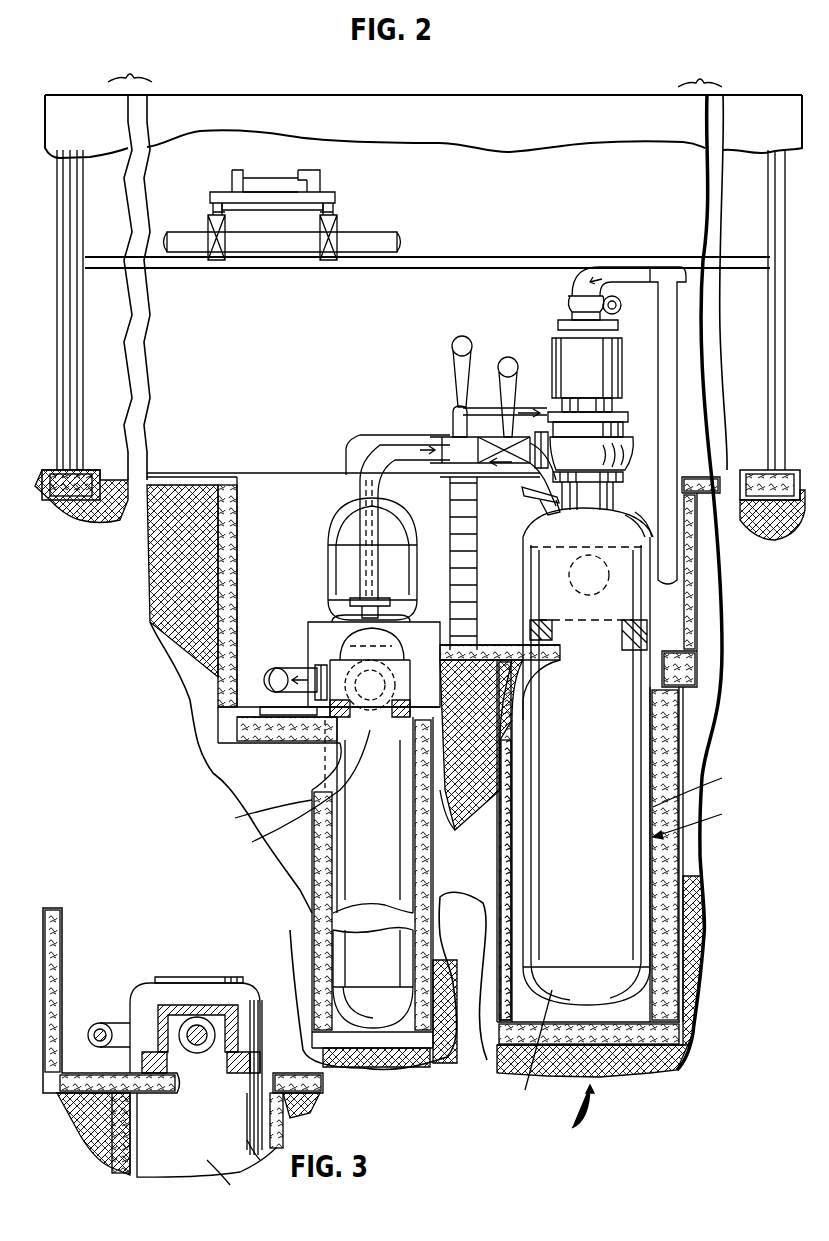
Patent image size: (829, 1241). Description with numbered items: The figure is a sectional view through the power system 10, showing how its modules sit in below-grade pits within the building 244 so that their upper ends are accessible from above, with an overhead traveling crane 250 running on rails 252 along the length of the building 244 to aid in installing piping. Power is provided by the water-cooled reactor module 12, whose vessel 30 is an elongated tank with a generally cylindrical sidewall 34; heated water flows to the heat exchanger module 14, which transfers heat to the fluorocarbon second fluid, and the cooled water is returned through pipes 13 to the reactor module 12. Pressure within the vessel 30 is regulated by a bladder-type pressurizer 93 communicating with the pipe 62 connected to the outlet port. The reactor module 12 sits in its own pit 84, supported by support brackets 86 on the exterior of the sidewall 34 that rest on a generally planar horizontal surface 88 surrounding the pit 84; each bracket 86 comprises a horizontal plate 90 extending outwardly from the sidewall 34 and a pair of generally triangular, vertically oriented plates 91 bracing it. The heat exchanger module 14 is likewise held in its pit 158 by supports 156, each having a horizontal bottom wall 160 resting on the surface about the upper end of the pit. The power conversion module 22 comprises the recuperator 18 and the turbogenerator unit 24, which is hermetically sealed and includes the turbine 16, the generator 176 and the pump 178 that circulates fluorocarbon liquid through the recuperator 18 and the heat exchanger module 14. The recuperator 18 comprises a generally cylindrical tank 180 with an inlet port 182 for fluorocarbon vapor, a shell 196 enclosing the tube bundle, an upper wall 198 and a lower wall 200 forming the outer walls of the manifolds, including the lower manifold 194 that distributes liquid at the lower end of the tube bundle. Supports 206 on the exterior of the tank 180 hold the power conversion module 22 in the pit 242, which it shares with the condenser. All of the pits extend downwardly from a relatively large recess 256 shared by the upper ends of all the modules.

In FIG. 2, the system 10 is at (569, 1112).
In FIG. 2, the reactor module 12 is at (318, 608).
In FIG. 3, the reactor module 12 is at (189, 1135).
In FIG. 2, the pipes 13 is at (277, 666).
In FIG. 2, the heat exchanger module 14 is at (378, 832).
In FIG. 2, the turbine 16 is at (634, 450).
In FIG. 2, the recuperator 18 is at (701, 817).
In FIG. 2, the power conversion module 22 is at (665, 605).
In FIG. 2, the turbogenerator unit 24 is at (542, 348).
In FIG. 3, the vessel 30 is at (142, 1000).
In FIG. 3, the sidewall 34 is at (229, 1180).
In FIG. 3, the pipe 62 is at (197, 1053).
In FIG. 3, the pit 84 is at (264, 1000).
In FIG. 3, the support brackets 86 is at (256, 1000).
In FIG. 3, the horizontal surface 88 is at (125, 1065).
In FIG. 3, the horizontal plate 90 is at (263, 1159).
In FIG. 3, the triangular plates 91 is at (234, 1065).
In FIG. 2, the pressurizer 93 is at (342, 501).
In FIG. 2, the supports 156 is at (256, 813).
In FIG. 2, the pit 158 is at (462, 821).
In FIG. 2, the horizontal bottom wall 160 is at (292, 790).
In FIG. 2, the generator 176 is at (623, 370).
In FIG. 2, the pump 178 is at (621, 300).
In FIG. 2, the tank 180 is at (592, 834).
In FIG. 2, the inlet port 182 is at (598, 497).
In FIG. 2, the lower manifold 194 is at (437, 480).
In FIG. 2, the shell 196 is at (705, 784).
In FIG. 2, the upper wall 198 is at (595, 528).
In FIG. 2, the lower wall 200 is at (524, 1052).
In FIG. 2, the supports 206 is at (620, 637).
In FIG. 2, the pit 242 is at (665, 735).
In FIG. 2, the building 244 is at (84, 390).
In FIG. 2, the overhead traveling crane 250 is at (335, 197).
In FIG. 2, the rails 252 is at (377, 260).
In FIG. 2, the recess 256 is at (264, 487).